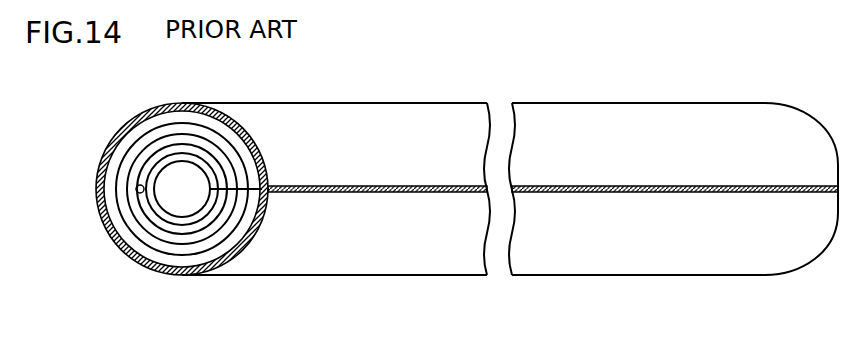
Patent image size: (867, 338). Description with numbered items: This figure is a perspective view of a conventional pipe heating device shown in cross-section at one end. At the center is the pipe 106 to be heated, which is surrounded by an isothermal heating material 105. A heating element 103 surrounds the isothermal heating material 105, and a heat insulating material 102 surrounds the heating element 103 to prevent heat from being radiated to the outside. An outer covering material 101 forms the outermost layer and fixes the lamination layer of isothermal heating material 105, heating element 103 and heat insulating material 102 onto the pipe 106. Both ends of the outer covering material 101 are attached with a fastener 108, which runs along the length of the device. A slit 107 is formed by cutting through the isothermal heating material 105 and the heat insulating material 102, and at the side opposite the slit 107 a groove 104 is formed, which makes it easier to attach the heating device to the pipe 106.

The outer covering material 101 is at (125, 133).
The heat insulating material 102 is at (124, 149).
The heating element 103 is at (125, 171).
The groove 104 is at (136, 187).
The isothermal heating material 105 is at (147, 210).
The pipe 106 is at (158, 218).
The slit 107 is at (240, 187).
The fastener 108 is at (322, 186).